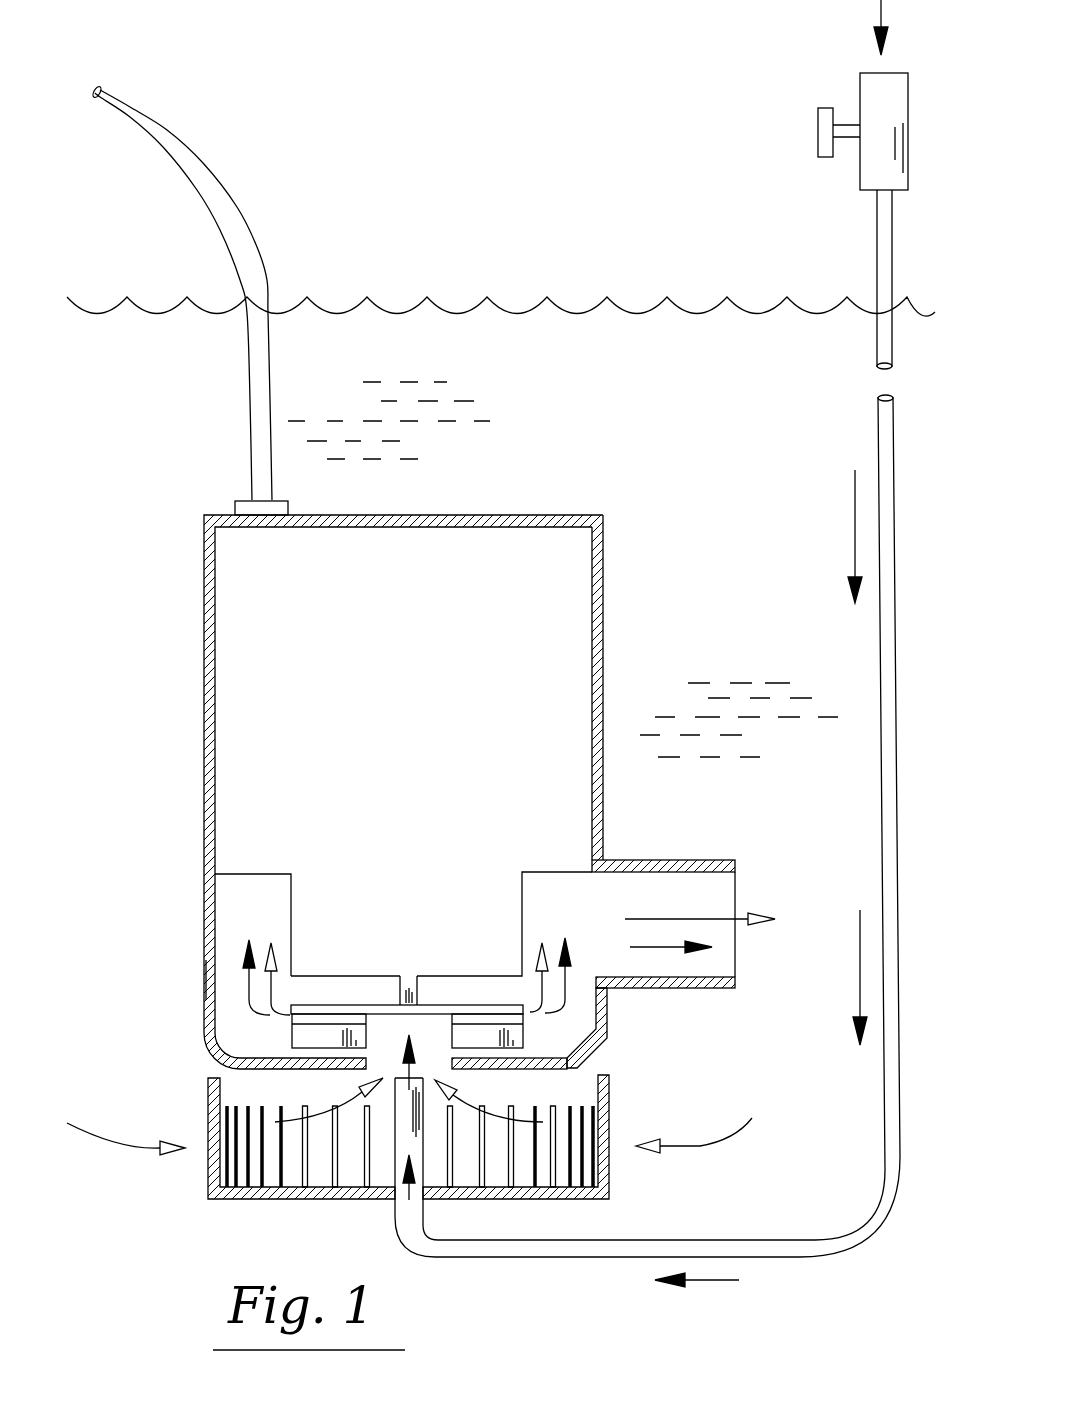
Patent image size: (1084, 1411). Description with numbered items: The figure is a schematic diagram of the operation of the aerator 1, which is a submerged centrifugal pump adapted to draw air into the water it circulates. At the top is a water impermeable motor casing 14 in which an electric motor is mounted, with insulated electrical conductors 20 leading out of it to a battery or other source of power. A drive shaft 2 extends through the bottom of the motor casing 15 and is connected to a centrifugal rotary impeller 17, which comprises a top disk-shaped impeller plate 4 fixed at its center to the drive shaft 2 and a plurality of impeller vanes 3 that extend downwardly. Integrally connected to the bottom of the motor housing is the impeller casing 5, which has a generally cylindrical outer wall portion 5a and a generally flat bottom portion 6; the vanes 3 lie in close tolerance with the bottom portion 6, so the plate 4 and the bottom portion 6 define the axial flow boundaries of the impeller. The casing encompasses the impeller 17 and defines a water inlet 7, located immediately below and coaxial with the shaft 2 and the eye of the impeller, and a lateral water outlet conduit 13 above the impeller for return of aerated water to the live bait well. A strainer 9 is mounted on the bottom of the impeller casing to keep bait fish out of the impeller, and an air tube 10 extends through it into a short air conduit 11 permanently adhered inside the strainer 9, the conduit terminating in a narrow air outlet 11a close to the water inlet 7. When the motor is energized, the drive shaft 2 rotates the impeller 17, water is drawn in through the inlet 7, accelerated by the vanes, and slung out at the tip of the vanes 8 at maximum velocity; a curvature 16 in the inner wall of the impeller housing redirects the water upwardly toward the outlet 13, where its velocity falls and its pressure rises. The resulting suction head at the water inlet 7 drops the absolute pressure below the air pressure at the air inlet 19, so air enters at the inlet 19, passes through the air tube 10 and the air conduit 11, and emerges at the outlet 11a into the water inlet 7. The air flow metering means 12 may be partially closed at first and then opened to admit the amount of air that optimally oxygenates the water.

The aerator 1 is at (222, 702).
The drive shaft 2 is at (408, 977).
The impeller vanes 3 is at (328, 1040).
The top impeller plate 4 is at (512, 1008).
The impeller casing 5 is at (292, 898).
The outer wall portion 5a is at (207, 925).
The flat bottom portion 6 is at (532, 1070).
The water inlet 7 is at (329, 1096).
The tip of the vanes 8 is at (523, 1013).
The strainer 9 is at (277, 1200).
The air tube 10 is at (630, 1253).
The air conduit 11 is at (397, 1150).
The air outlet 11a is at (423, 1063).
The air flow metering means 12 is at (863, 183).
The water outlet conduit 13 is at (733, 883).
The motor casing 14 is at (603, 627).
The motor casing 15 is at (308, 975).
The curvature 16 is at (222, 1050).
The centrifugal rotary impeller 17 is at (431, 1007).
The air inlet 19 is at (879, 73).
The electrical conductors 20 is at (182, 140).